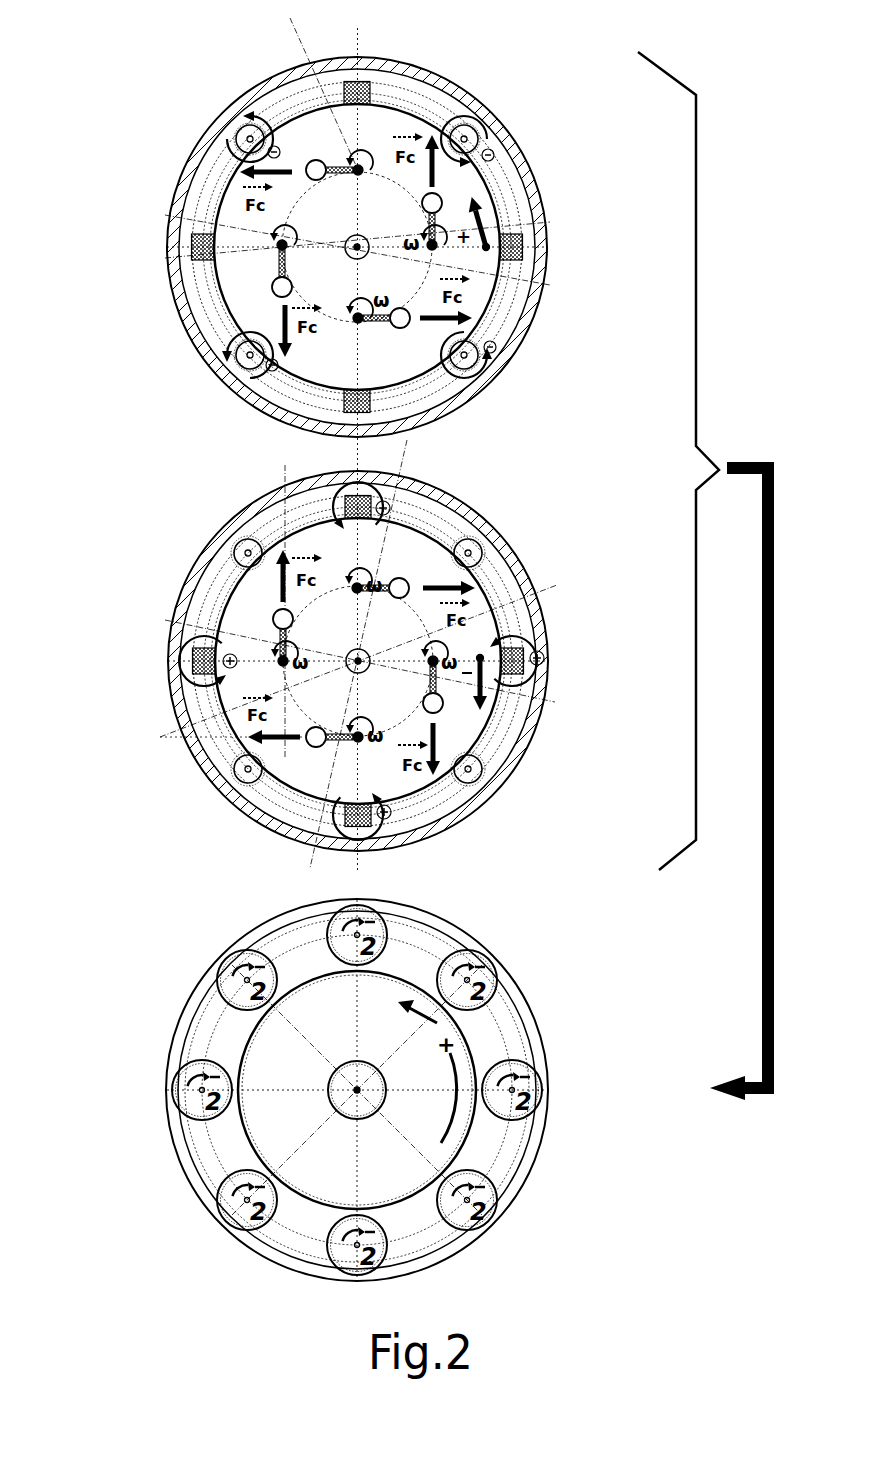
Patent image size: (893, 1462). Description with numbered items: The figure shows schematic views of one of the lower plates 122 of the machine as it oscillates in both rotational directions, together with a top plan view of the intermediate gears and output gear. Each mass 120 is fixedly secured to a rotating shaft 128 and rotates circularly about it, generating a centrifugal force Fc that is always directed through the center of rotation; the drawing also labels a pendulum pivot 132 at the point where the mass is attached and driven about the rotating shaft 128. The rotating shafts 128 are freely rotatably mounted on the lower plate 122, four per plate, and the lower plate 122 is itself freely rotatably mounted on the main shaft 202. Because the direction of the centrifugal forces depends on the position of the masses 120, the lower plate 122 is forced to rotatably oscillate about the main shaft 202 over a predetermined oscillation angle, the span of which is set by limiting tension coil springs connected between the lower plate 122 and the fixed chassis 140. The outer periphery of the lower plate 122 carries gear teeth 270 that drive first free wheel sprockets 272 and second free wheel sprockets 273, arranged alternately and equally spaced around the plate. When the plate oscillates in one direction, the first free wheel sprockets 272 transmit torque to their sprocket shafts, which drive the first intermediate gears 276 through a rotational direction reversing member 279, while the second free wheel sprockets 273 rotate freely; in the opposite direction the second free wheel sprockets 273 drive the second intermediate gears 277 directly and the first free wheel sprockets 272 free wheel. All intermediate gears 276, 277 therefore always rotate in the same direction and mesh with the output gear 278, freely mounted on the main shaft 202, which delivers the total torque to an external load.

The mass 120 is at (273, 292).
The lower plate 122 is at (240, 540).
The rotating shaft 128 is at (345, 165).
The pendulum pivot 132 is at (275, 252).
The fixed chassis 140 is at (468, 833).
The main shaft 202 is at (520, 296).
The gear teeth 270 is at (200, 550).
The first free wheel sprocket 272 is at (358, 80).
The second free wheel sprocket 273 is at (490, 132).
The first intermediate gear 276 is at (388, 928).
The second intermediate gear 277 is at (486, 963).
The output gear 278 is at (340, 1060).
The rotational direction reversing member 279 is at (198, 232).